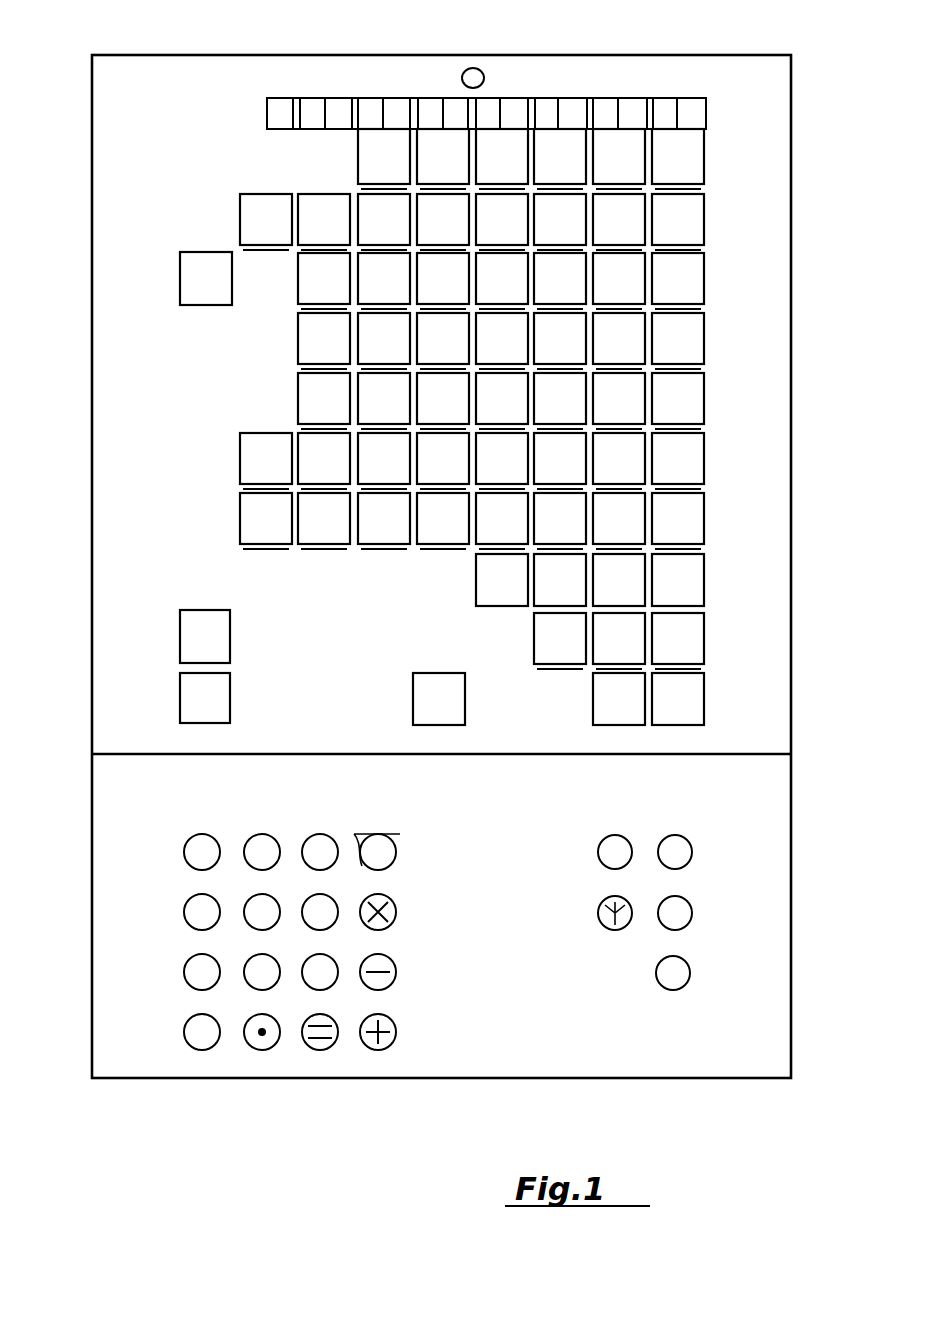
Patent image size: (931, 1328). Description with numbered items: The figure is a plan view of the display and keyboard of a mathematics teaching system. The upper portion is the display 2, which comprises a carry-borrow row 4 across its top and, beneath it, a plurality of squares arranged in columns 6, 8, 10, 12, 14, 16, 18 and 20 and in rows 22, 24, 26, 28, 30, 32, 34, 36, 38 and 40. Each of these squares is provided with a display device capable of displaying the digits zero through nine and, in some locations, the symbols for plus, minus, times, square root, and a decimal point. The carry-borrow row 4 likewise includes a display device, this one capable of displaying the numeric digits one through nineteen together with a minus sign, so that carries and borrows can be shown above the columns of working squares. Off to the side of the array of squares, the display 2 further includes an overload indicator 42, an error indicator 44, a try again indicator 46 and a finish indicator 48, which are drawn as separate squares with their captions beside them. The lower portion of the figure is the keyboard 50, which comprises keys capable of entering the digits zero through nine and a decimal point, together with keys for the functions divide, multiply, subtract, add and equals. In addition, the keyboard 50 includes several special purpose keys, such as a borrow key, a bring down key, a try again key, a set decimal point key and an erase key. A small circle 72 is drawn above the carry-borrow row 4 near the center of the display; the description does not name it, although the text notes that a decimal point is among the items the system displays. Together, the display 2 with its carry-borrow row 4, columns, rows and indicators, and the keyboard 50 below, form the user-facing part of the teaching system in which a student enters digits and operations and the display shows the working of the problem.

The display 2 is at (441, 566).
The carry-borrow row 4 is at (135, 108).
The column 6 is at (683, 97).
The column 8 is at (615, 97).
The column 10 is at (565, 97).
The column 12 is at (503, 97).
The column 14 is at (442, 97).
The column 16 is at (390, 97).
The column 18 is at (328, 97).
The column 20 is at (287, 97).
The row 22 is at (705, 150).
The row 24 is at (705, 222).
The row 26 is at (705, 281).
The row 28 is at (705, 340).
The row 30 is at (705, 398).
The row 32 is at (705, 463).
The row 34 is at (705, 522).
The row 36 is at (704, 577).
The row 38 is at (704, 628).
The row 40 is at (704, 700).
The overload indicator 42 is at (197, 305).
The error indicator 44 is at (231, 638).
The try again indicator 46 is at (231, 697).
The finish indicator 48 is at (457, 650).
The keyboard 50 is at (442, 942).
The decimal point indicator 72 is at (473, 68).